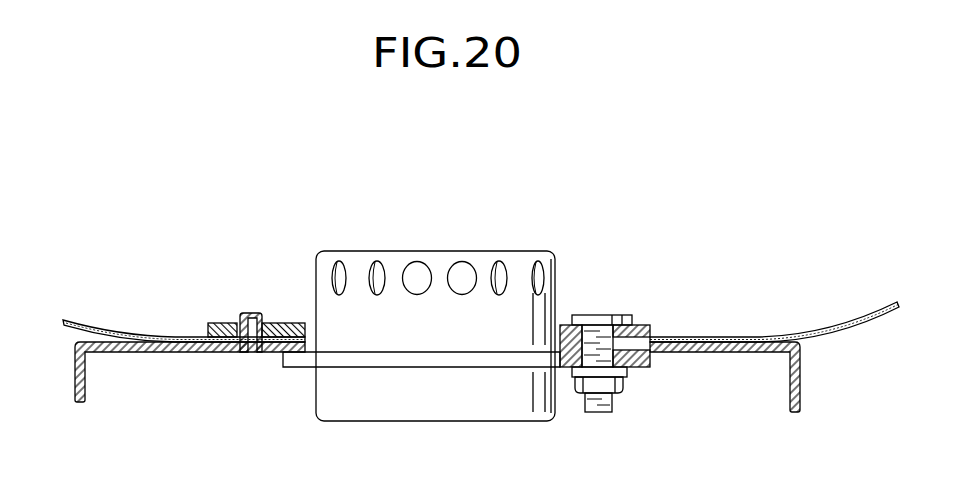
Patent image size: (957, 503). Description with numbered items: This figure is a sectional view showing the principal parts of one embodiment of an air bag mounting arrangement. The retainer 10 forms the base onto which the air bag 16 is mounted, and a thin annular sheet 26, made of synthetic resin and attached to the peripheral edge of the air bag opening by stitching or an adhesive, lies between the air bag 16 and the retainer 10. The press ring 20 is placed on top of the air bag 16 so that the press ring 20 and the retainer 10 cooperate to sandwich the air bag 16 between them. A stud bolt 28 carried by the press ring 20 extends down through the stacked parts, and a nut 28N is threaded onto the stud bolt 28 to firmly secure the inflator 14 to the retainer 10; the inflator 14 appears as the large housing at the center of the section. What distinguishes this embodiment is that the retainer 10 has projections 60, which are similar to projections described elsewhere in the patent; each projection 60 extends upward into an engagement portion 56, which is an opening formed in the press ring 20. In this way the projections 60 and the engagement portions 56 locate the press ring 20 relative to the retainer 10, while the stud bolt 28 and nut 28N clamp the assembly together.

The retainer 10 is at (138, 352).
The inflator 14 is at (412, 422).
The air bag 16 is at (852, 328).
The press ring 20 is at (648, 324).
The annular sheet 26 is at (213, 337).
The stud bolt 28 is at (598, 315).
The nut 28N is at (628, 387).
The engagement portion 56 is at (223, 323).
The projection 60 is at (257, 313).